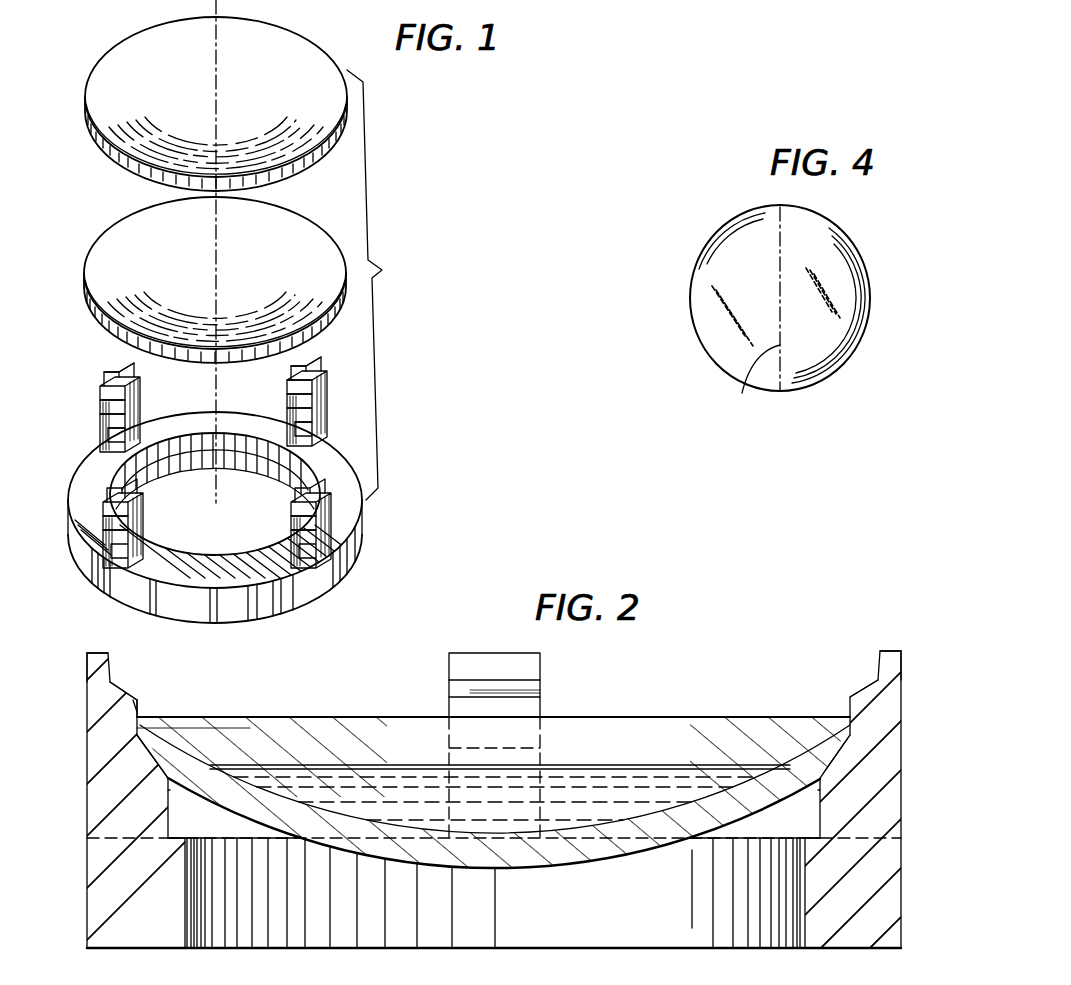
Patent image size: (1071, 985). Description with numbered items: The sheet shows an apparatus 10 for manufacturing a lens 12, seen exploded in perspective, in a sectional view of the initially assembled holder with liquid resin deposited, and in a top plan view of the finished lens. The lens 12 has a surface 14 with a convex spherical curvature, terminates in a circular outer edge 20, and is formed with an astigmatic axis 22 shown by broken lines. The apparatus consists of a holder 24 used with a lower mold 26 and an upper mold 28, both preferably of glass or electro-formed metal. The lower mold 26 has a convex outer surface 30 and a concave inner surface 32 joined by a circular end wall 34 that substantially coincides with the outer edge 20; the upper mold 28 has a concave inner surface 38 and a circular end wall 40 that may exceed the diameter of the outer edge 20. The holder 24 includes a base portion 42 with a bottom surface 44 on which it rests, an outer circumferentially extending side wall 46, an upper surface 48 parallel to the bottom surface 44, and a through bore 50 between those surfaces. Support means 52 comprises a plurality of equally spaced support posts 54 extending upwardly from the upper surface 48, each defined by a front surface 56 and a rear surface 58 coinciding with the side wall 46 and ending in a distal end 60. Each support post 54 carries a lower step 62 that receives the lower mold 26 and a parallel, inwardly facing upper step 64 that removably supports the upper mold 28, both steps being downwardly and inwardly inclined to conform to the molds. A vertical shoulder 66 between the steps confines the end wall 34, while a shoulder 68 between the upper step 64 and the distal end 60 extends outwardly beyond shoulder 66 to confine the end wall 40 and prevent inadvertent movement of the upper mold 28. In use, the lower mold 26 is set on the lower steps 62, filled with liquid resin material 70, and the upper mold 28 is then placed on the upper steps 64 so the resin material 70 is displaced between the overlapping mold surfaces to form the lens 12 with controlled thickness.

In FIG. 1, the apparatus 10 is at (382, 566).
In FIG. 2, the apparatus 10 is at (920, 715).
In FIG. 4, the lens 12 is at (803, 316).
In FIG. 4, the surface 14 is at (838, 250).
In FIG. 4, the outer edge 20 is at (838, 370).
In FIG. 4, the astigmatic axis 22 is at (742, 398).
In FIG. 1, the holder 24 is at (229, 486).
In FIG. 2, the holder 24 is at (535, 784).
In FIG. 1, the lower mold 26 is at (213, 279).
In FIG. 2, the lower mold 26 is at (490, 799).
In FIG. 1, the upper mold 28 is at (250, 99).
In FIG. 2, the outer surface 30 is at (458, 870).
In FIG. 1, the inner surface 32 is at (288, 235).
In FIG. 2, the inner surface 32 is at (180, 742).
In FIG. 1, the end wall 34 is at (105, 307).
In FIG. 2, the end wall 34 is at (137, 730).
In FIG. 1, the inner surface 38 is at (283, 57).
In FIG. 1, the end wall 40 is at (320, 148).
In FIG. 1, the base portion 42 is at (243, 585).
In FIG. 2, the base portion 42 is at (100, 900).
In FIG. 1, the bottom surface 44 is at (185, 618).
In FIG. 2, the bottom surface 44 is at (128, 950).
In FIG. 1, the side wall 46 is at (343, 577).
In FIG. 2, the side wall 46 is at (88, 858).
In FIG. 1, the upper surface 48 is at (98, 478).
In FIG. 2, the upper surface 48 is at (106, 826).
In FIG. 1, the through bore 50 is at (173, 465).
In FIG. 2, the through bore 50 is at (187, 903).
In FIG. 1, the support means 52 is at (325, 395).
In FIG. 2, the support means 52 is at (150, 700).
In FIG. 1, the support post 54 is at (100, 420).
In FIG. 2, the support post 54 is at (95, 760).
In FIG. 1, the front surface 56 is at (140, 428).
In FIG. 2, the front surface 56 is at (168, 814).
In FIG. 1, the rear surface 58 is at (95, 540).
In FIG. 2, the rear surface 58 is at (92, 787).
In FIG. 1, the distal end 60 is at (112, 383).
In FIG. 2, the distal end 60 is at (90, 652).
In FIG. 1, the lower step 62 is at (128, 415).
In FIG. 2, the lower step 62 is at (208, 732).
In FIG. 1, the upper step 64 is at (100, 396).
In FIG. 2, the upper step 64 is at (122, 690).
In FIG. 1, the shoulder 66 is at (105, 392).
In FIG. 2, the shoulder 66 is at (130, 698).
In FIG. 1, the shoulder 68 is at (127, 386).
In FIG. 2, the shoulder 68 is at (111, 658).
In FIG. 2, the resin material 70 is at (636, 778).